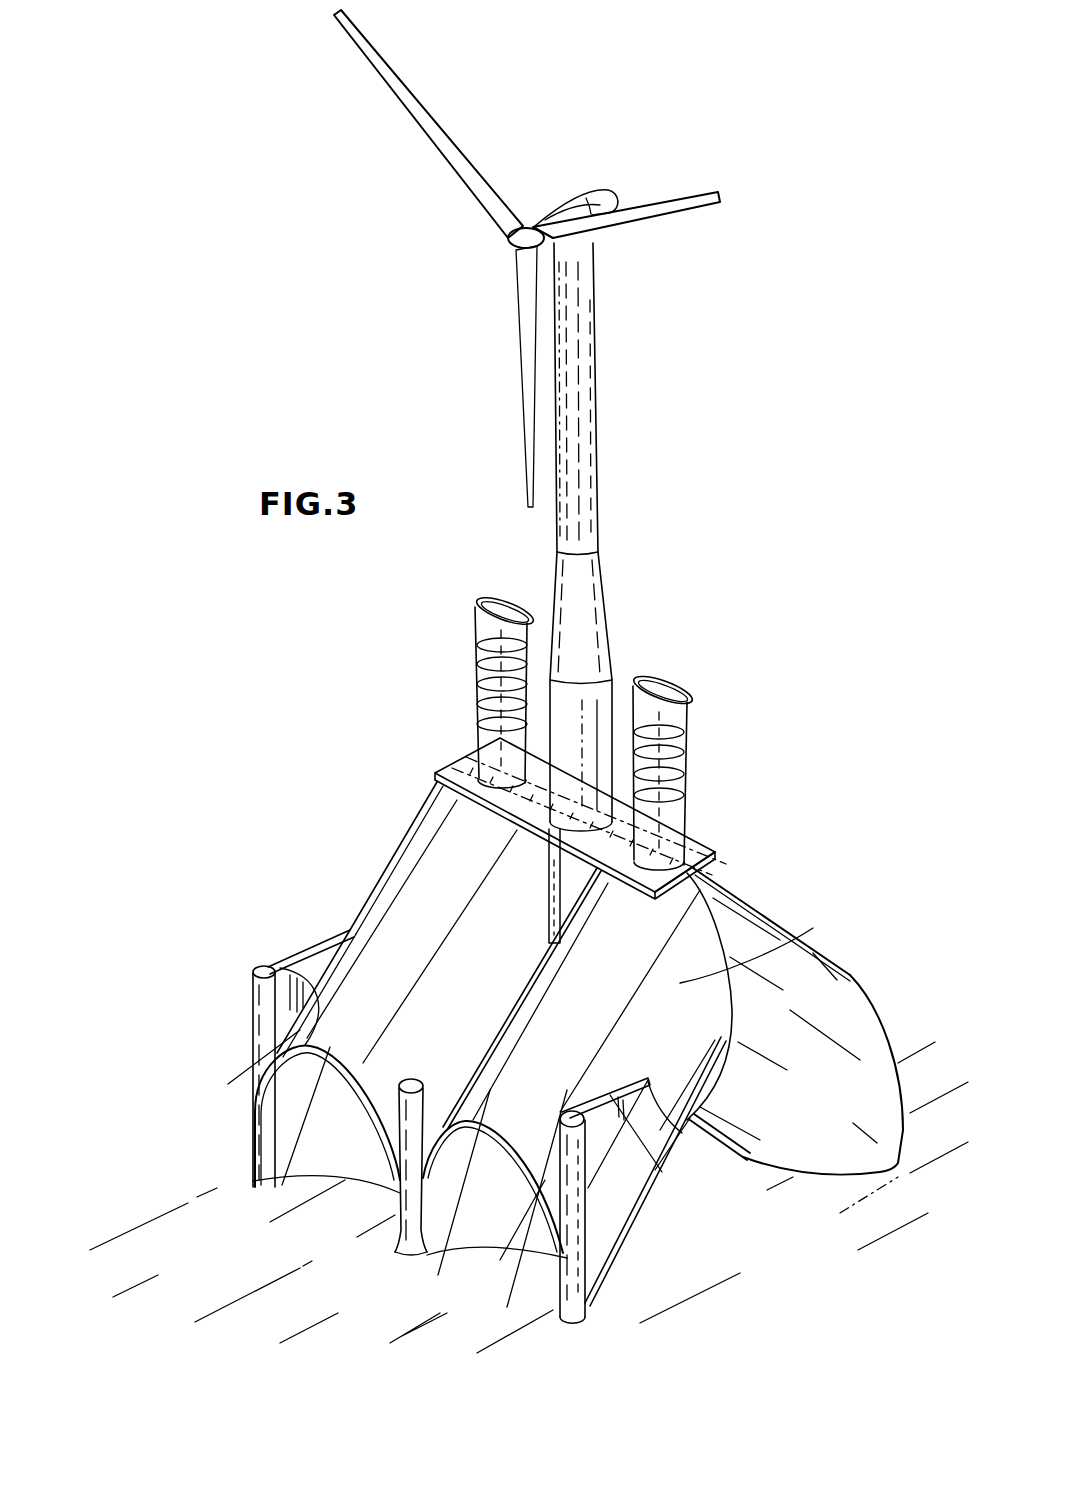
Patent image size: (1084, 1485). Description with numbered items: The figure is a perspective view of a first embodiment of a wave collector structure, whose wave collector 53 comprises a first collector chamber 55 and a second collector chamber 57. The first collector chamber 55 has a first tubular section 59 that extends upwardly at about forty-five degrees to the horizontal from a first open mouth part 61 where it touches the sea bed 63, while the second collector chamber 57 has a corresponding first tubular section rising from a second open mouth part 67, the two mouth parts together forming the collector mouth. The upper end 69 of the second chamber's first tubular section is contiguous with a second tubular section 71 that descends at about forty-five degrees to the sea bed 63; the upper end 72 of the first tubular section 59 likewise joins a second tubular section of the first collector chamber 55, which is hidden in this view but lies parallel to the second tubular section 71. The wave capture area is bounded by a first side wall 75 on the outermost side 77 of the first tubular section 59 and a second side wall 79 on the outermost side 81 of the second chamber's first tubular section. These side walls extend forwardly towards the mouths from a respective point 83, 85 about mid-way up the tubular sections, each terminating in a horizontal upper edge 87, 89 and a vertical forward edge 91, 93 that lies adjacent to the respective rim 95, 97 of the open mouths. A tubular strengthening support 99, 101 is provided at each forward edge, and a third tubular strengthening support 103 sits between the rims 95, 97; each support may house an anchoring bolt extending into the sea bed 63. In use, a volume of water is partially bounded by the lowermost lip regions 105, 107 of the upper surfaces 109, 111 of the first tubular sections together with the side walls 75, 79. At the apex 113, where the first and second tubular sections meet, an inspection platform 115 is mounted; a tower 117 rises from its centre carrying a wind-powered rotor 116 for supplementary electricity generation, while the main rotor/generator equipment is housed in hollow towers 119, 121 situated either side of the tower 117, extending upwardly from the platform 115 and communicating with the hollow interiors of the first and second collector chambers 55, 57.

The wave collector 53 is at (343, 871).
The first collector chamber 55 is at (410, 825).
The second collector chamber 57 is at (627, 1223).
The first tubular section 59 is at (390, 912).
The first open mouth part 61 is at (343, 1190).
The sea bed 63 is at (202, 1303).
The second open mouth part 67 is at (498, 1267).
The upper end 69 is at (713, 947).
The second tubular section 71 is at (833, 1000).
The upper end 72 is at (435, 785).
The first side wall 75 is at (290, 993).
The outermost side 77 is at (270, 962).
The second side wall 79 is at (627, 1183).
The outermost side 81 is at (600, 1245).
The point 83 is at (345, 933).
The point 85 is at (743, 1147).
The horizontal upper edge 87 is at (298, 948).
The horizontal upper edge 89 is at (645, 1203).
The vertical forward edge 91 is at (265, 1107).
The vertical forward edge 93 is at (530, 1272).
The rim 95 is at (393, 1197).
The rim 97 is at (558, 1290).
The tubular strengthening support 99 is at (253, 1169).
The tubular strengthening support 101 is at (582, 1300).
The third tubular strengthening support 103 is at (400, 1257).
The lowermost lip region 105 is at (300, 1183).
The lowermost lip region 107 is at (492, 1277).
The upper surface 109 is at (443, 913).
The upper surface 111 is at (813, 928).
The apex 113 is at (728, 860).
The inspection platform 115 is at (473, 770).
The wind-powered rotor 116 is at (607, 187).
The tower 117 is at (598, 493).
The hollow tower 119 is at (493, 598).
The hollow tower 121 is at (667, 687).